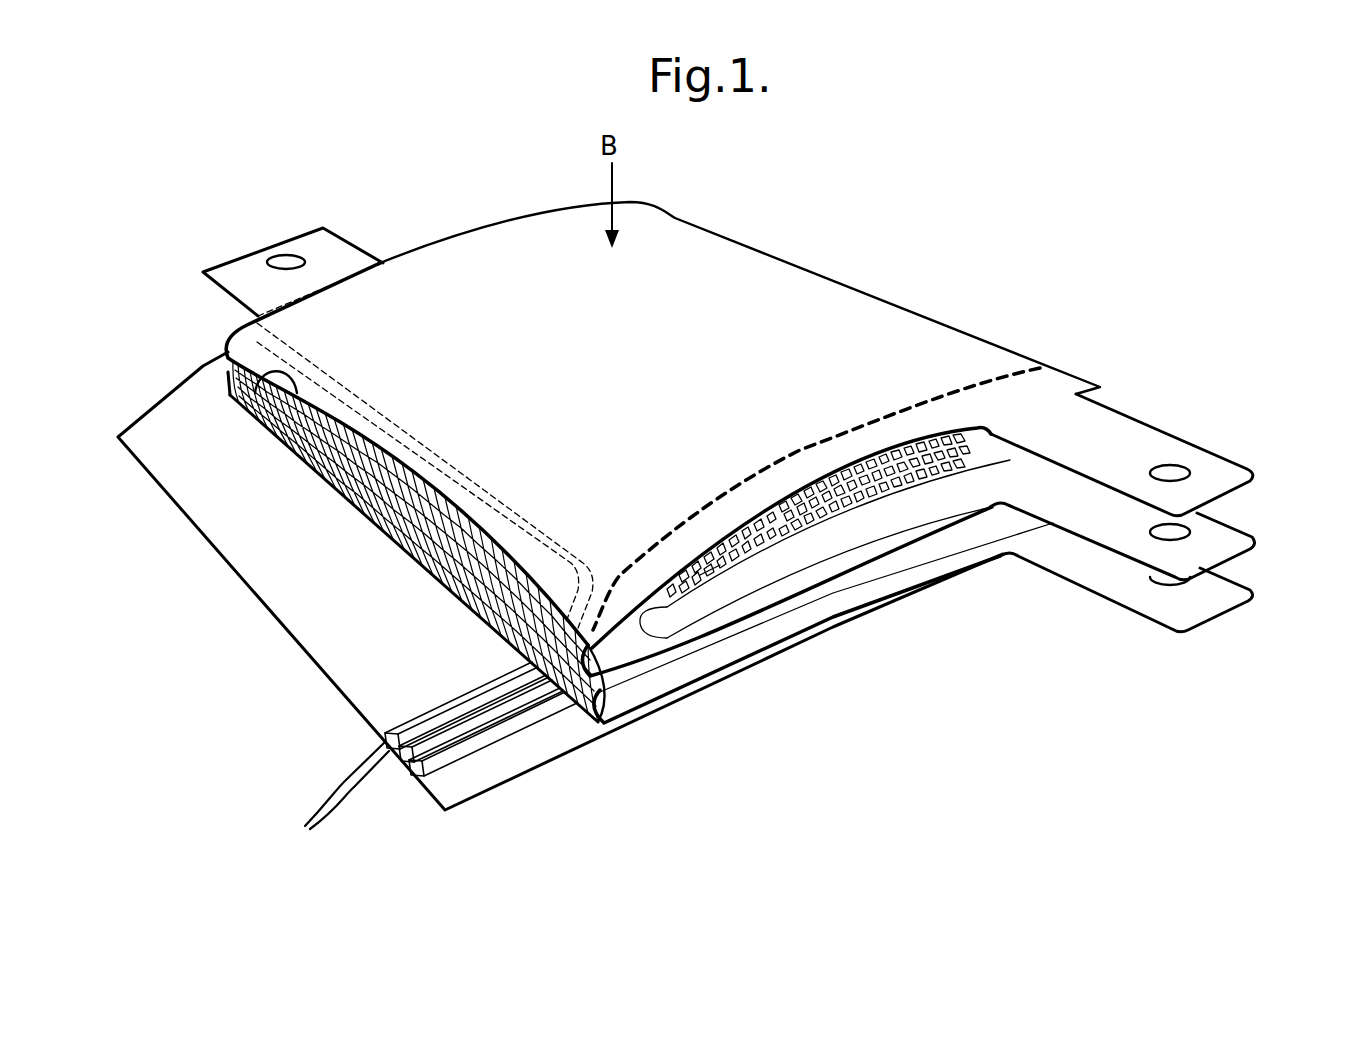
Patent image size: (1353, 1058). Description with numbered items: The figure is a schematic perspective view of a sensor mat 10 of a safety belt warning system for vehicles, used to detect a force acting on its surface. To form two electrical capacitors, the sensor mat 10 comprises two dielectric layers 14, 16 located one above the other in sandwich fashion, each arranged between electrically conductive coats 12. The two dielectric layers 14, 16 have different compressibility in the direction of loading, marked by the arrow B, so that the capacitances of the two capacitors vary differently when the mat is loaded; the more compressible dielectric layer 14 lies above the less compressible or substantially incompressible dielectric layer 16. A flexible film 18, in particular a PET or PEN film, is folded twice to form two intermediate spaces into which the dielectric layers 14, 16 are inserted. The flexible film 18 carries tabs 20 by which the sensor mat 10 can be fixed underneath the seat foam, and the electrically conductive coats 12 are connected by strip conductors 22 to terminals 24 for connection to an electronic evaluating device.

The sensor mat 10 is at (832, 196).
The electrically conductive coats 12 is at (958, 360).
The dielectric layer 14 is at (830, 548).
The dielectric layer 16 is at (467, 573).
The flexible film 18 is at (293, 603).
The tabs 20 is at (333, 250).
The strip conductors 22 is at (487, 693).
The terminals 24 is at (308, 826).